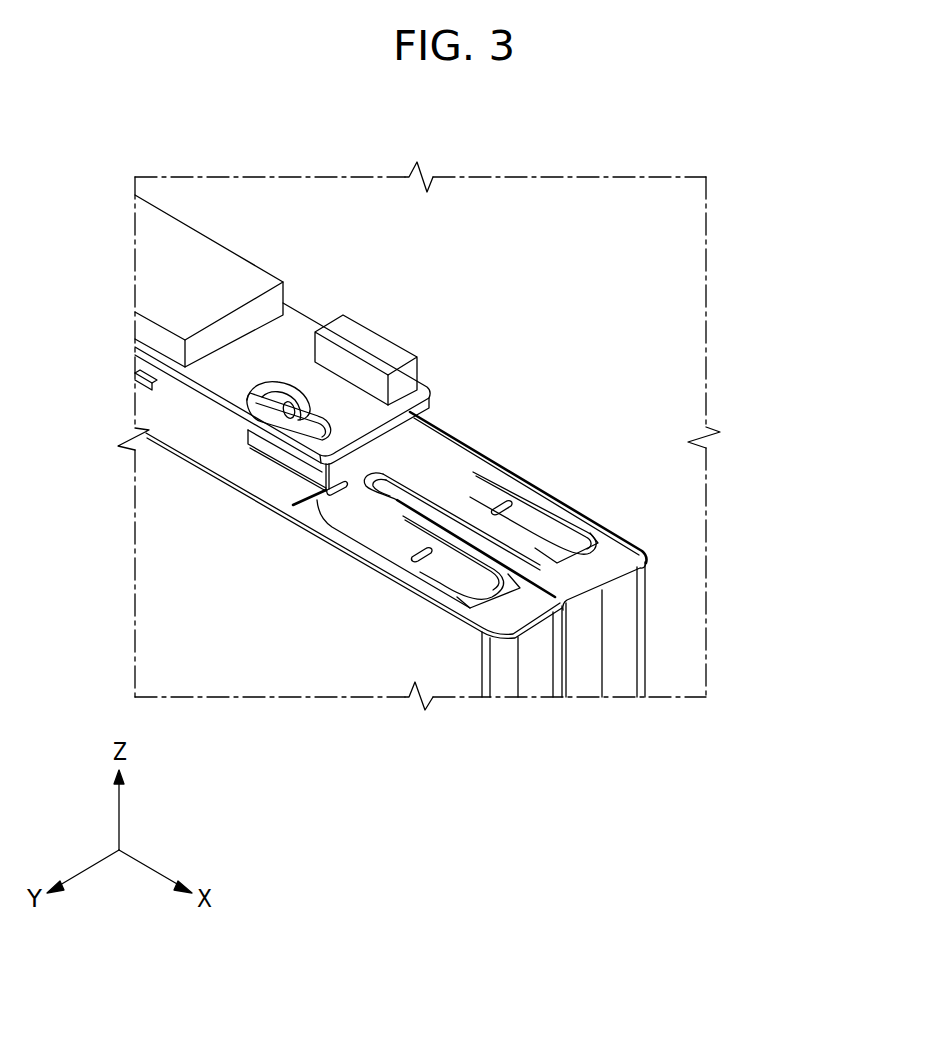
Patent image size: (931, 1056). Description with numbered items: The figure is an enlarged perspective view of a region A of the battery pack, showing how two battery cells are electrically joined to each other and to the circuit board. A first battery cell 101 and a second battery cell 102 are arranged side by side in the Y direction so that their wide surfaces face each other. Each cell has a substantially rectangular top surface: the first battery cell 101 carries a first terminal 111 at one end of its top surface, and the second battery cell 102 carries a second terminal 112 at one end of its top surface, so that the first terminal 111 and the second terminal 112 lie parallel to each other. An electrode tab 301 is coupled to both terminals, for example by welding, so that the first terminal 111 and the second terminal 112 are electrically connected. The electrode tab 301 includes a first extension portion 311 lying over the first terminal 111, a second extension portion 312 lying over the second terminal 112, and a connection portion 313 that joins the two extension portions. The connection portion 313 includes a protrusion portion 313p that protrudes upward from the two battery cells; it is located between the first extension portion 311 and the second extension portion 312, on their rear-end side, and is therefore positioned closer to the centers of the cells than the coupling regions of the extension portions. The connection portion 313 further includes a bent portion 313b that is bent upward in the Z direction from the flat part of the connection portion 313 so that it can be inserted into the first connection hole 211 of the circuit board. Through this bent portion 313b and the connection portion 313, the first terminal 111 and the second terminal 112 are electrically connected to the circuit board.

The region A is at (706, 286).
The first battery cell 101 is at (628, 646).
The second battery cell 102 is at (441, 668).
The first terminal 111 is at (575, 548).
The second terminal 112 is at (500, 600).
The first connection hole 211 is at (252, 396).
The electrode tab 301 is at (641, 417).
The first extension portion 311 is at (562, 533).
The second extension portion 312 is at (462, 575).
The connection portion 313 is at (418, 457).
The bent portion 313b is at (282, 400).
The protrusion portion 313p is at (393, 485).